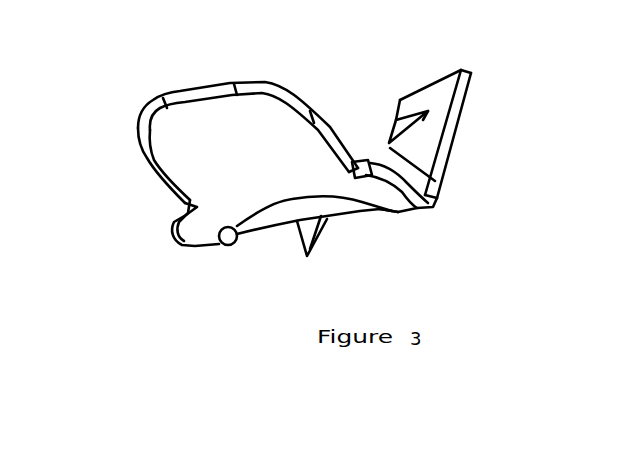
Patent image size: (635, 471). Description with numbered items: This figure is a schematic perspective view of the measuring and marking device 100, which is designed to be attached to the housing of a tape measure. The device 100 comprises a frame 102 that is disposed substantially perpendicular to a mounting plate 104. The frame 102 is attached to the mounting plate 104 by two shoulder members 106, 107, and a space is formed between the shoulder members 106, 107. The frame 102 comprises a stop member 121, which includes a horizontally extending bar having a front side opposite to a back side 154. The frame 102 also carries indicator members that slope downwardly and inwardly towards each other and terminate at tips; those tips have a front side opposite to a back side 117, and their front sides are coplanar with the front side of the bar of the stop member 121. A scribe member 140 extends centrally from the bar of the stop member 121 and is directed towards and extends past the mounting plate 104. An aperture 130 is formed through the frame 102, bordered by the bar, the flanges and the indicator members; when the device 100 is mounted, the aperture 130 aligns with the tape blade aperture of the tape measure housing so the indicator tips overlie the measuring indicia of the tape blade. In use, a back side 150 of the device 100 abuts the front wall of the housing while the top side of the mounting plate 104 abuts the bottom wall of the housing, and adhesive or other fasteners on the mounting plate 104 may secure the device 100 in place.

The measuring and marking device 100 is at (502, 36).
The frame 102 is at (506, 186).
The mounting plate 104 is at (176, 158).
The shoulder member 106 is at (408, 218).
The shoulder member 107 is at (211, 247).
The back side 117 is at (398, 118).
The stop member 121 is at (432, 177).
The aperture 130 is at (377, 151).
The scribe member 140 is at (322, 228).
The back side 150 is at (437, 91).
The back side 154 is at (270, 211).